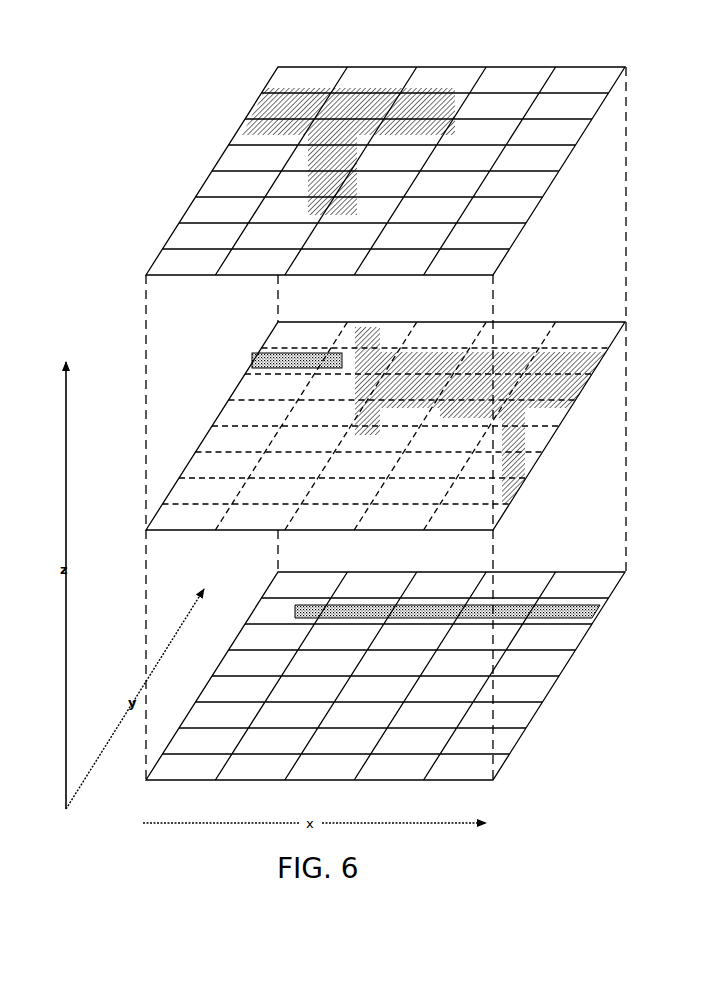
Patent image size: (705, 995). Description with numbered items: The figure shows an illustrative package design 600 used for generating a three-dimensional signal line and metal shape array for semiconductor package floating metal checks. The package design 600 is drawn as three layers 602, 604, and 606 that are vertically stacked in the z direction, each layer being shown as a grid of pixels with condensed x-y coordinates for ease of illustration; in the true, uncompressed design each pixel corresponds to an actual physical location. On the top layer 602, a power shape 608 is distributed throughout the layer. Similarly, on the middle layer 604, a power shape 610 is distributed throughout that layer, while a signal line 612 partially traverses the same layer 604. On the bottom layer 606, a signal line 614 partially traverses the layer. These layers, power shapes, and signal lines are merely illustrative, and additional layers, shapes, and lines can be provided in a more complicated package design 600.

The package design 600 is at (124, 76).
The layer 602 is at (585, 68).
The layer 604 is at (585, 321).
The layer 606 is at (590, 572).
The power shape 608 is at (270, 120).
The power shape 610 is at (577, 385).
The signal line 612 is at (270, 362).
The signal line 614 is at (597, 618).